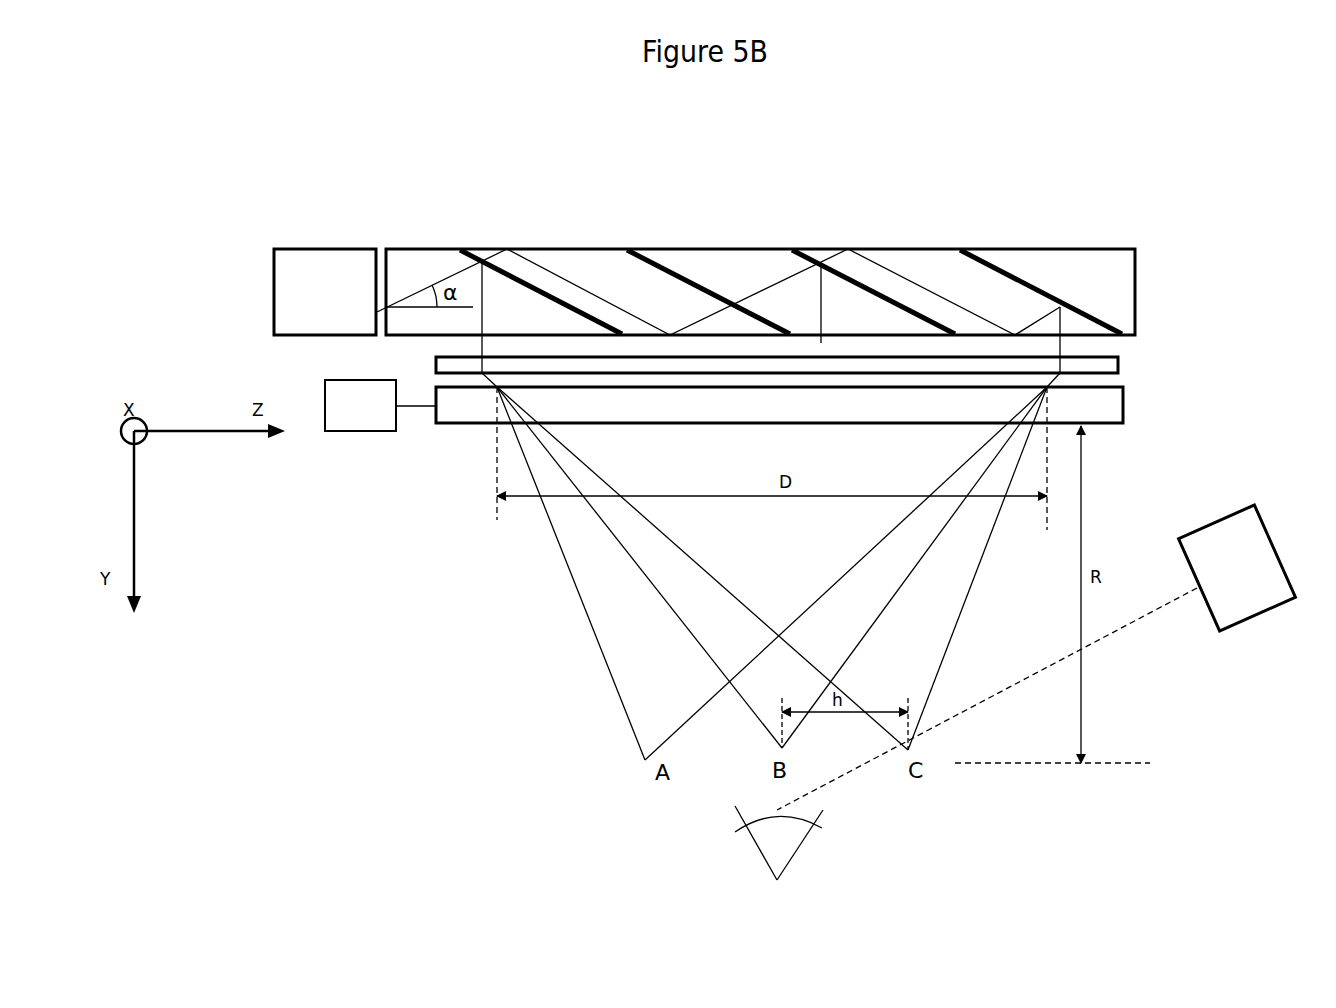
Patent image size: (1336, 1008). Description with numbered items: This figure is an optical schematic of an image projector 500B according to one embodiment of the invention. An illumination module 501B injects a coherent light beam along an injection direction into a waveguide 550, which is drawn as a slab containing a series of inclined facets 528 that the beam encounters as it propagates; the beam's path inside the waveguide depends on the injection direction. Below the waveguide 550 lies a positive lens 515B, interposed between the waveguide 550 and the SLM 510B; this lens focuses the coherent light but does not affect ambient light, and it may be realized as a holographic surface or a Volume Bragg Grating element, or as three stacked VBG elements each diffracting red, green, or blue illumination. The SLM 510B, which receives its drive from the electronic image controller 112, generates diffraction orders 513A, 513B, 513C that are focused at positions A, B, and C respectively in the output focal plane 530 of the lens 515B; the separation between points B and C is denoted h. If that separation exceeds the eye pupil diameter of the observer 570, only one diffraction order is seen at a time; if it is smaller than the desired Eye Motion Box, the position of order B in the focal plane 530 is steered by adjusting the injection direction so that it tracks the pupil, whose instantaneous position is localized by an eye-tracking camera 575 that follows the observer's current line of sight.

The image projector 500B is at (552, 147).
The illumination module 501B is at (325, 292).
The electronic image controller 112 is at (380, 405).
The partially reflective facets 528 is at (982, 268).
The waveguide 550 is at (1097, 249).
The positive lens 515B is at (1123, 365).
The SLM 510B is at (1128, 410).
The diffraction order 513A is at (552, 532).
The diffraction order 513B is at (633, 560).
The diffraction order 513C is at (737, 598).
The eye-tracking camera 575 is at (1036, 657).
The observer 570 is at (820, 836).
The output focal plane 530 is at (1130, 763).